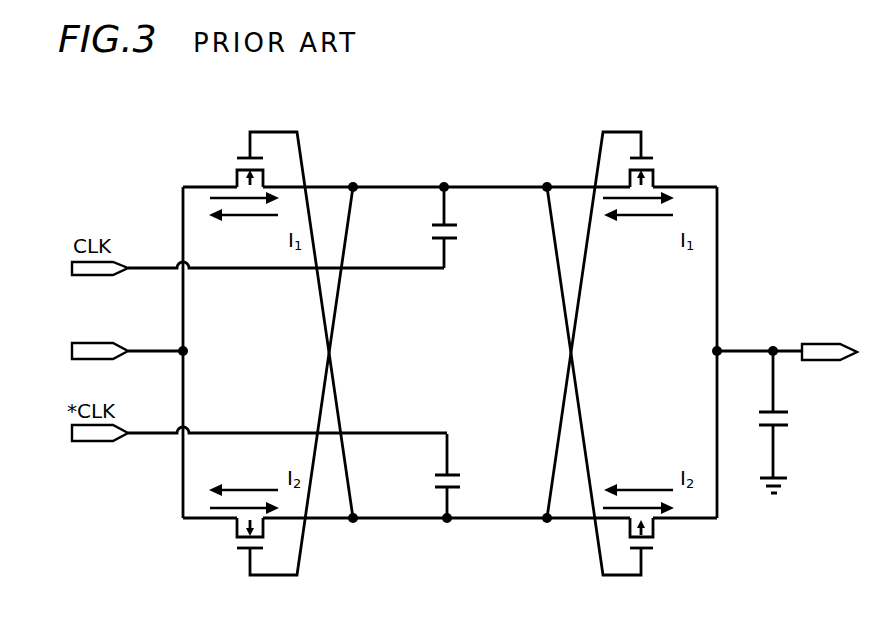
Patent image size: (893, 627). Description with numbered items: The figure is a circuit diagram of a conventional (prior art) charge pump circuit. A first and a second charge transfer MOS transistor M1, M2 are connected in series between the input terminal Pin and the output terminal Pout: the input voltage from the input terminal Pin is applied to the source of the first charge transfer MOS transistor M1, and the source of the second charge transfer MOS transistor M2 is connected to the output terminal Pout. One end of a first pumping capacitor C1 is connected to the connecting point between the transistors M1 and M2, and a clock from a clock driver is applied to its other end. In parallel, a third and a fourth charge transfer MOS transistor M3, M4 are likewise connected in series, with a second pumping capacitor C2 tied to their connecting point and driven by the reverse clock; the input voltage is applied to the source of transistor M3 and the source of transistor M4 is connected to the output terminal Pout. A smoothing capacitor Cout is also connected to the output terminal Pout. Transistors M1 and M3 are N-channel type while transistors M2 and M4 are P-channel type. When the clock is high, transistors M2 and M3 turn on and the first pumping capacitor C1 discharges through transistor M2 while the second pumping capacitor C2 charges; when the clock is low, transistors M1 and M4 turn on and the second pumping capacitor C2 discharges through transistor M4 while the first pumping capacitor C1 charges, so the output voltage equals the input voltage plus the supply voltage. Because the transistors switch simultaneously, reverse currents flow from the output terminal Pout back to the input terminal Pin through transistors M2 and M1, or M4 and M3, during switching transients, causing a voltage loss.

The first charge transfer MOS transistor M1 is at (237, 157).
The second charge transfer MOS transistor M2 is at (655, 150).
The third charge transfer MOS transistor M3 is at (237, 553).
The fourth charge transfer MOS transistor M4 is at (652, 553).
The first pumping capacitor C1 is at (460, 227).
The second pumping capacitor C2 is at (464, 476).
The smoothing capacitor Cout is at (800, 422).
The input terminal Pin is at (80, 352).
The output terminal Pout is at (830, 356).